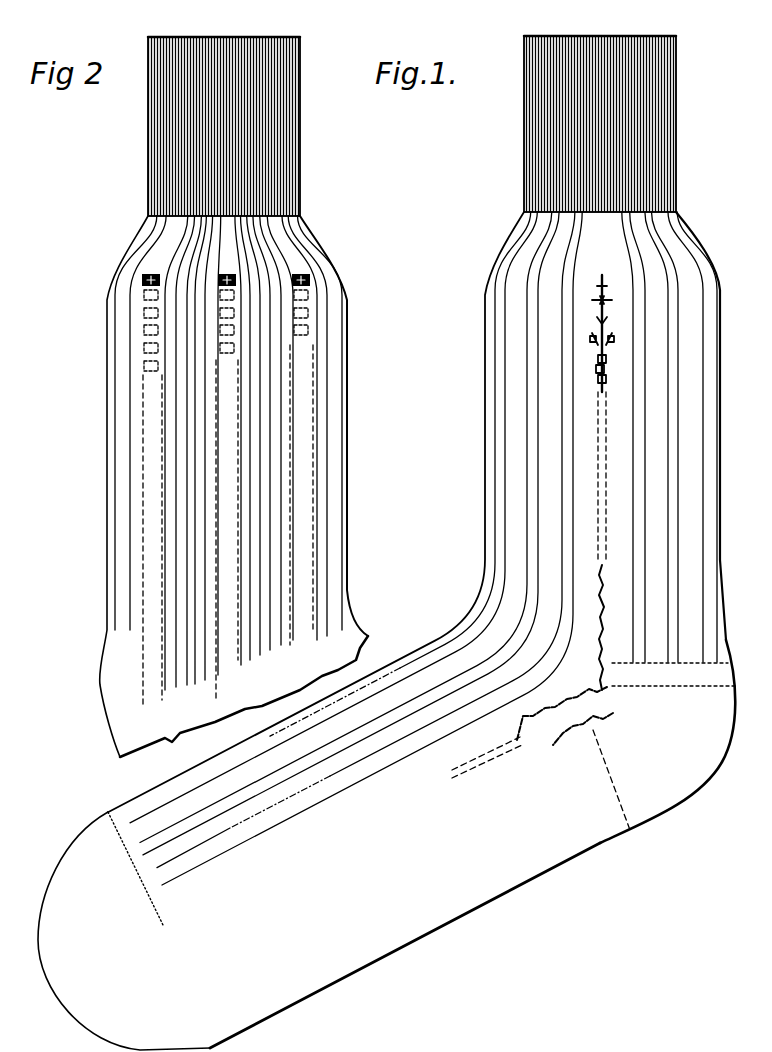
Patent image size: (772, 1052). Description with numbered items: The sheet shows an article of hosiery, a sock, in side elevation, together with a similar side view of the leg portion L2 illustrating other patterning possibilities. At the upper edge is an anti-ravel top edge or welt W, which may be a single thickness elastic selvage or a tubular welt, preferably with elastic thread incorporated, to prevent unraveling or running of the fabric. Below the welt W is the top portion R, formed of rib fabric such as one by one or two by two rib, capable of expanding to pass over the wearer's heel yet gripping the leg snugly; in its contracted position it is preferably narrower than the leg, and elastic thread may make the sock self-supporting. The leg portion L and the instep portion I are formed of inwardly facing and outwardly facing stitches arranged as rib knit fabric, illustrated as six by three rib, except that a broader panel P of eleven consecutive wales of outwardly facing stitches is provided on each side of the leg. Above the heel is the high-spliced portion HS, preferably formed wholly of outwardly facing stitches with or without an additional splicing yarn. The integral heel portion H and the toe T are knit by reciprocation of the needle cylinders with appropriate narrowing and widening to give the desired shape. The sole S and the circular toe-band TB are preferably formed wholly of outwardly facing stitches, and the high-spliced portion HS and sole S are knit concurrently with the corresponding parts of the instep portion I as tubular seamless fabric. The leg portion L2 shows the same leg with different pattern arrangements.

In FIG. 2, the welt W is at (300, 38).
In FIG. 1, the welt W is at (676, 40).
In FIG. 2, the top portion R is at (293, 110).
In FIG. 1, the top portion R is at (670, 110).
In FIG. 1, the leg portion L is at (490, 340).
In FIG. 2, the leg (Fig. 2) L2 is at (234, 486).
In FIG. 1, the panel P is at (612, 387).
In FIG. 1, the instep portion I is at (398, 662).
In FIG. 1, the high-spliced portion HS is at (705, 690).
In FIG. 1, the heel portion H is at (702, 760).
In FIG. 1, the sole portion S is at (483, 887).
In FIG. 1, the toe T is at (62, 862).
In FIG. 1, the toe-band portion TB is at (125, 822).